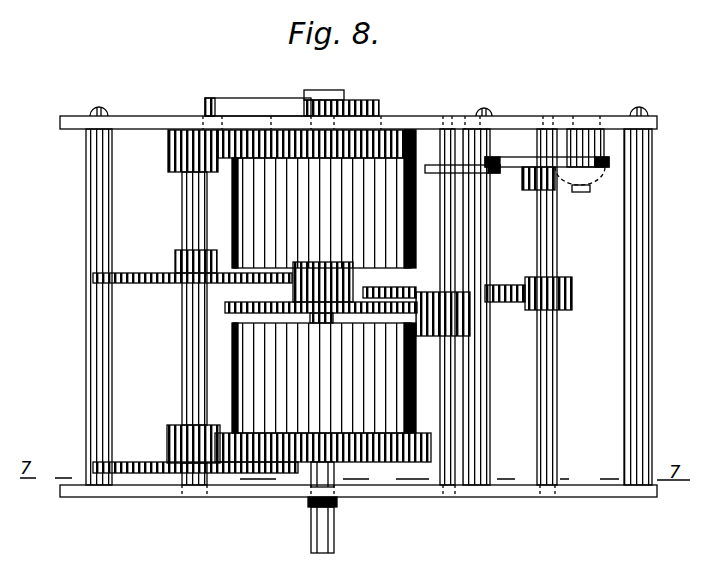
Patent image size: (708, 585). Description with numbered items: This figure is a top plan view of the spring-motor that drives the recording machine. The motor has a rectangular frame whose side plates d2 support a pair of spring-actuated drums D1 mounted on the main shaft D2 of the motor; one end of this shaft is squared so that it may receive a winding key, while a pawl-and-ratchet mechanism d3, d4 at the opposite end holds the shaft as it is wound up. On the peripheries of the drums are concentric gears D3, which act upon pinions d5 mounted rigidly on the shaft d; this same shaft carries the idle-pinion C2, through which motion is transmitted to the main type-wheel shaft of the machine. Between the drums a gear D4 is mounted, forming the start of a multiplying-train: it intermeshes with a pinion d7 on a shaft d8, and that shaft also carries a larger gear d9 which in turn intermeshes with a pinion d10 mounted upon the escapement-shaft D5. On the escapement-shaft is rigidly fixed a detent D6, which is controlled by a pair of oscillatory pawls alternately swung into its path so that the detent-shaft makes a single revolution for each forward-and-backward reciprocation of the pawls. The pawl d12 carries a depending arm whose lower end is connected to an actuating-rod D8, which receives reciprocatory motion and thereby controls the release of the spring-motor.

The side frame members or plates d2 is at (533, 118).
The actuating-rod D8 is at (462, 117).
The shaft d8 is at (457, 408).
The escapement-shaft D5 is at (558, 368).
The shaft d is at (182, 375).
The spring-actuated drums D1 is at (324, 281).
The concentric gears D3 is at (406, 129).
The main shaft of the motor D2 is at (336, 500).
The pawl-and-ratchet mechanism d3 is at (294, 103).
The pawl-and-ratchet mechanism d4 is at (383, 100).
The pinions d5 is at (174, 128).
The gear D4 is at (225, 310).
The larger gear d9 is at (470, 288).
The pinion d7 is at (456, 334).
The pinion d10 is at (565, 280).
The idle-pinion C2 is at (140, 474).
The oscillatory pawl d12 is at (522, 157).
The detent D6 is at (533, 196).